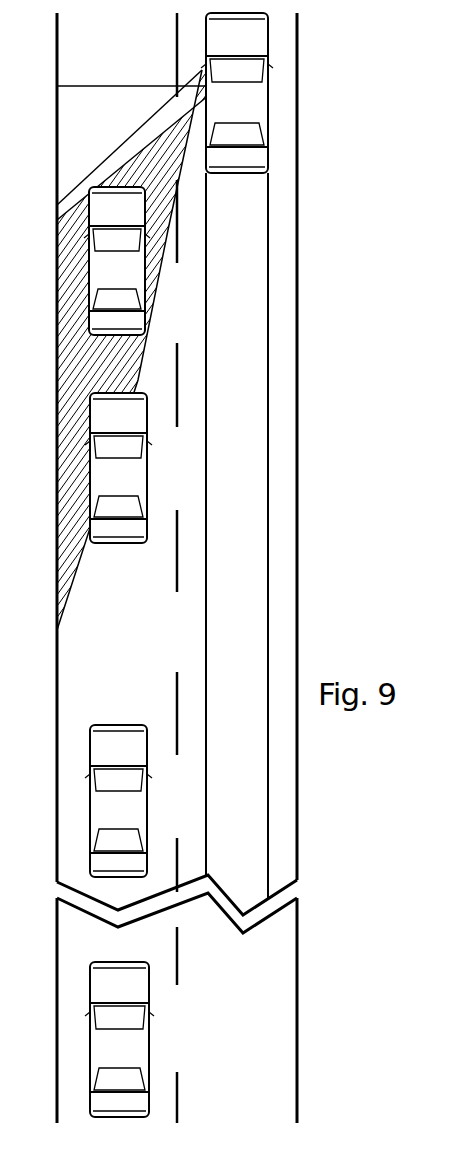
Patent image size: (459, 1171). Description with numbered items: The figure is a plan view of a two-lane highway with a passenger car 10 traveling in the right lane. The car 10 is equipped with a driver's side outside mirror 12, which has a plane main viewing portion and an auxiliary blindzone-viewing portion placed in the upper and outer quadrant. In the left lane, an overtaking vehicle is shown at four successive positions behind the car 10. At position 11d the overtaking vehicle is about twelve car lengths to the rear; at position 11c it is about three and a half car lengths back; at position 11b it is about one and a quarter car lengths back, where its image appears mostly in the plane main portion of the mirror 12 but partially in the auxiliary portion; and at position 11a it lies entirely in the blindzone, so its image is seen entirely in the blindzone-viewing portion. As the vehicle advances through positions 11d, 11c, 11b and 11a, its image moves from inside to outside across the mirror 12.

The passenger car 10 is at (268, 40).
The position of overtaking vehicle 11a is at (173, 293).
The position of overtaking vehicle 11b is at (172, 496).
The position of overtaking vehicle 11c is at (172, 828).
The position of overtaking vehicle 11d is at (172, 1062).
The driver's side outside mirror 12 is at (200, 68).